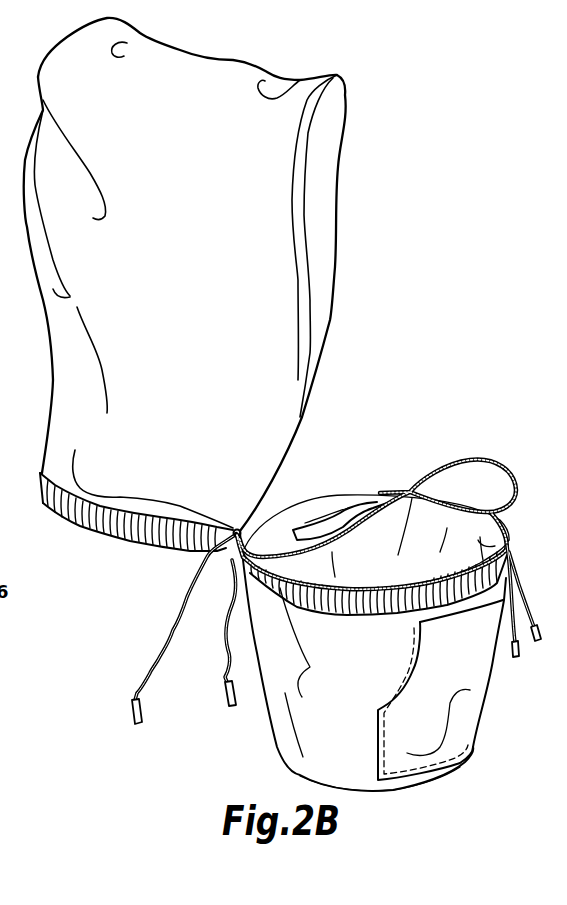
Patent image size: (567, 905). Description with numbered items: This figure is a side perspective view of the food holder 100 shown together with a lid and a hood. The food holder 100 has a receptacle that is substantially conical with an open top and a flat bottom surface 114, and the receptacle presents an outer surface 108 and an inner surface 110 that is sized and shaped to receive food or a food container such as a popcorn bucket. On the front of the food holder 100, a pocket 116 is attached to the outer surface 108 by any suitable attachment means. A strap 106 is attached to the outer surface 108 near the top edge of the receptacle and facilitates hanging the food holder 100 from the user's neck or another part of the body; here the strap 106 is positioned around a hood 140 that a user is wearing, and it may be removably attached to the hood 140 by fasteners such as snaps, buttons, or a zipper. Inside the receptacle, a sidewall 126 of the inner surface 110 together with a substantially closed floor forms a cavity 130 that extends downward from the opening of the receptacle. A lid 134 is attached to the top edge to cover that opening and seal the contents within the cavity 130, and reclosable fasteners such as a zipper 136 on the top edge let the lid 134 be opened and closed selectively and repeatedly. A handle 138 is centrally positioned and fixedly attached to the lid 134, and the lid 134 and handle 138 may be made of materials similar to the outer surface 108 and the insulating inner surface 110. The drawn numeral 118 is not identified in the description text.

The food holder 100 is at (385, 393).
The strap 106 is at (110, 540).
The outer surface 108 is at (280, 742).
The inner surface 110 is at (434, 521).
The bottom surface 114 is at (423, 787).
The pocket 116 is at (463, 728).
The drawstring ends 118 is at (533, 618).
The sidewall 126 is at (473, 517).
The cavity 130 is at (384, 569).
The lid 134 is at (310, 517).
The zipper 136 is at (472, 460).
The handle 138 is at (370, 500).
The hood 140 is at (163, 58).